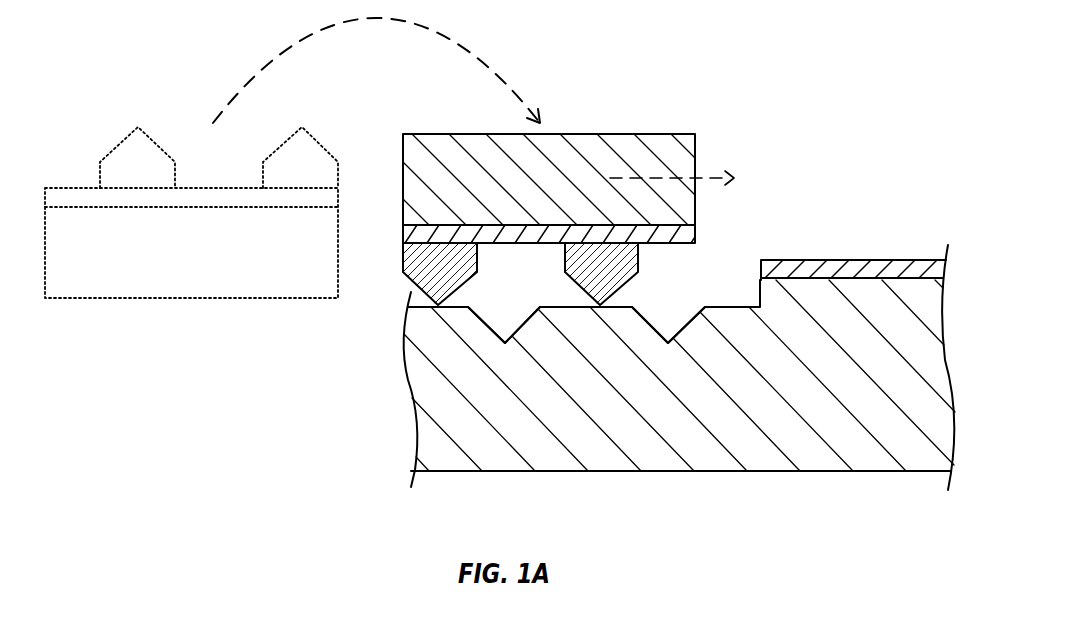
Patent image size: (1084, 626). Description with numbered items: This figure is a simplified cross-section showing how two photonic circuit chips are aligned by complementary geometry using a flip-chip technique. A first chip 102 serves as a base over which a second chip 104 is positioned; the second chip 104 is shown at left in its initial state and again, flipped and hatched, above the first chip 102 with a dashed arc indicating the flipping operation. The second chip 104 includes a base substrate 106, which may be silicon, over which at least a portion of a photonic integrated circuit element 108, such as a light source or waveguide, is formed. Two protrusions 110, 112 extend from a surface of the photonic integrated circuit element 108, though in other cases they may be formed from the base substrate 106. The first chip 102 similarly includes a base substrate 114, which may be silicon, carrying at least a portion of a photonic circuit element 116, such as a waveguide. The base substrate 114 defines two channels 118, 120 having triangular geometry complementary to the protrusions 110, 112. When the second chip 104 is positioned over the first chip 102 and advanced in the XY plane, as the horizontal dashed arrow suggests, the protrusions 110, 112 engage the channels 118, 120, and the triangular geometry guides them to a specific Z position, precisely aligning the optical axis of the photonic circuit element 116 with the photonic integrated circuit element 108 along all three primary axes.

The first chip 102 is at (903, 195).
The second chip 104 is at (77, 100).
The base substrate 106 is at (63, 298).
The photonic integrated circuit element 108 is at (55, 187).
The protrusion 110 is at (122, 140).
The protrusion 112 is at (278, 147).
The base substrate 114 is at (735, 472).
The photonic circuit element 116 is at (857, 260).
The channel 118 is at (498, 332).
The channel 120 is at (662, 332).